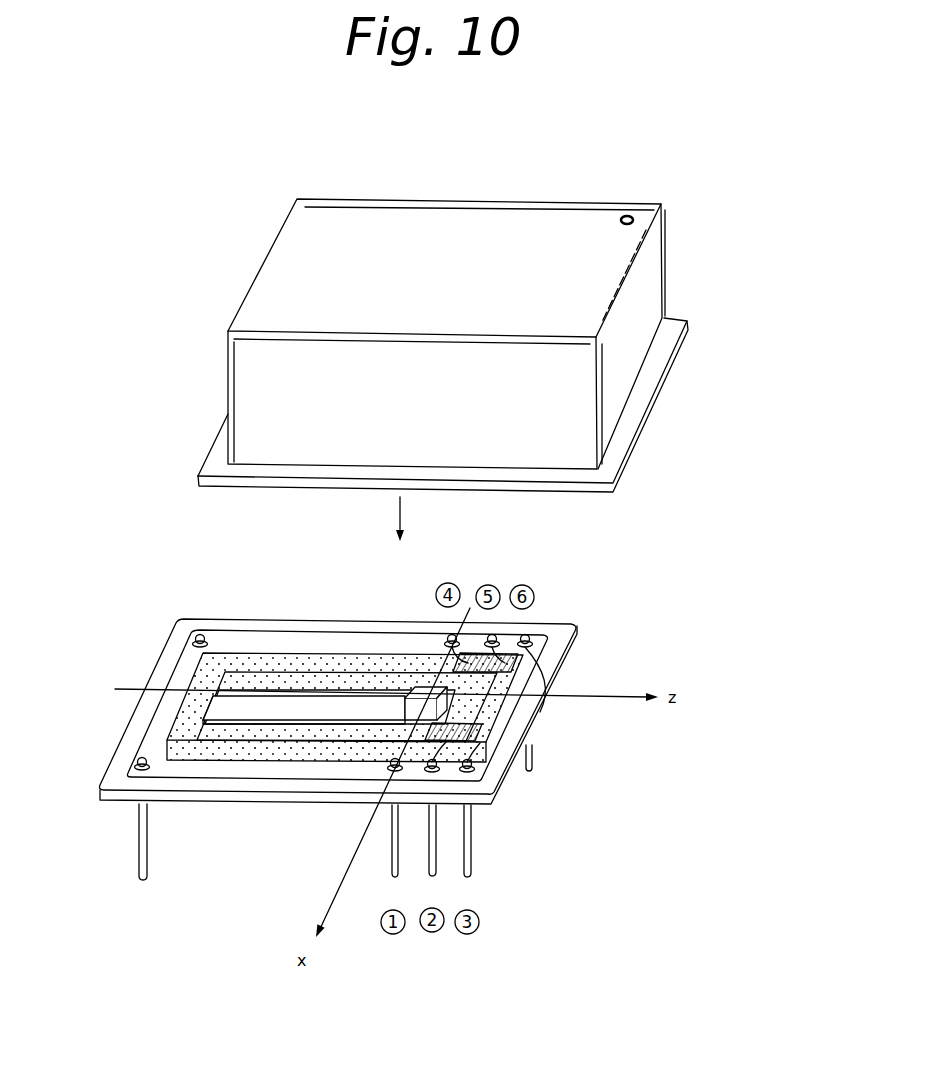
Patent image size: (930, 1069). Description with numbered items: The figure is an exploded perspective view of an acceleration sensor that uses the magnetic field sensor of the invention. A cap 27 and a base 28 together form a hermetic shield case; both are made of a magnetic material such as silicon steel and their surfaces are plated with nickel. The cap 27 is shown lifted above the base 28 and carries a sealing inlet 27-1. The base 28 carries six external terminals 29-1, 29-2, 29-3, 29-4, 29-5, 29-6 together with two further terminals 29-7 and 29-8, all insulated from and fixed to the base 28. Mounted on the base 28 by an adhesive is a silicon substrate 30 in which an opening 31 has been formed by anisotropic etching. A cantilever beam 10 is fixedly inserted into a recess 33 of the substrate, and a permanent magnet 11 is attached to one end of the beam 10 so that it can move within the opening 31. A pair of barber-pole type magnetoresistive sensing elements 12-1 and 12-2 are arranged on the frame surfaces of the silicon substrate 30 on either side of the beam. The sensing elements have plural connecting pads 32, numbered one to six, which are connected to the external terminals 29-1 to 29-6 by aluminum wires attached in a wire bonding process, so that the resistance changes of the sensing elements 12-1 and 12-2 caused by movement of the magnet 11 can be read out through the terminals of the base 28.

The cap 27 is at (473, 199).
The sealing inlet 27-1 is at (629, 214).
The base 28 is at (112, 760).
The external terminal 29-1 is at (392, 877).
The external terminal 29-2 is at (430, 877).
The external terminal 29-3 is at (472, 872).
The external terminal 29-4 is at (451, 634).
The external terminal 29-5 is at (490, 634).
The external terminal 29-6 is at (529, 635).
The terminal 29-7 is at (137, 853).
The terminal 29-8 is at (201, 634).
The silicon substrate 30 is at (291, 743).
The opening 31 is at (247, 672).
The connecting pads 32 is at (513, 672).
The recess 33 is at (196, 697).
The cantilever beam 10 is at (240, 708).
The permanent magnet 11 is at (410, 688).
The barber-pole type magnetoresistive sensing element 12-1 is at (488, 742).
The barber-pole type magnetoresistive sensing element 12-2 is at (522, 661).